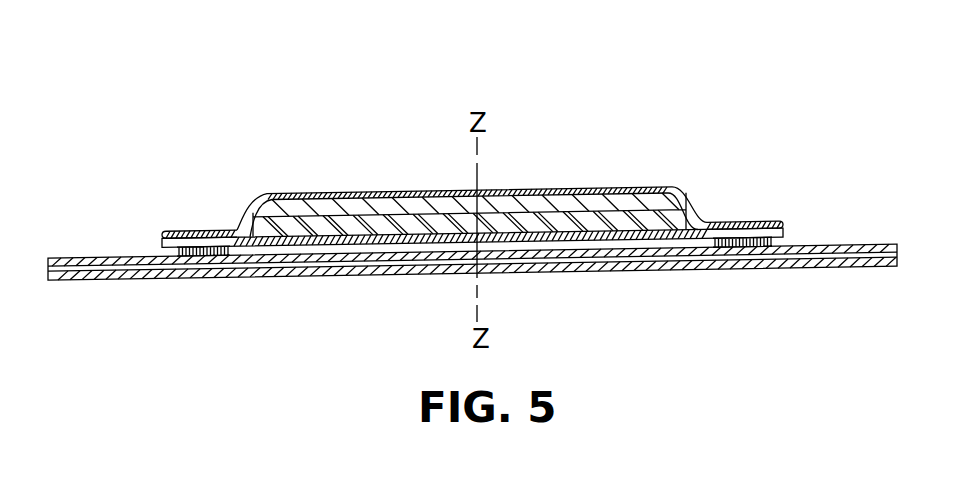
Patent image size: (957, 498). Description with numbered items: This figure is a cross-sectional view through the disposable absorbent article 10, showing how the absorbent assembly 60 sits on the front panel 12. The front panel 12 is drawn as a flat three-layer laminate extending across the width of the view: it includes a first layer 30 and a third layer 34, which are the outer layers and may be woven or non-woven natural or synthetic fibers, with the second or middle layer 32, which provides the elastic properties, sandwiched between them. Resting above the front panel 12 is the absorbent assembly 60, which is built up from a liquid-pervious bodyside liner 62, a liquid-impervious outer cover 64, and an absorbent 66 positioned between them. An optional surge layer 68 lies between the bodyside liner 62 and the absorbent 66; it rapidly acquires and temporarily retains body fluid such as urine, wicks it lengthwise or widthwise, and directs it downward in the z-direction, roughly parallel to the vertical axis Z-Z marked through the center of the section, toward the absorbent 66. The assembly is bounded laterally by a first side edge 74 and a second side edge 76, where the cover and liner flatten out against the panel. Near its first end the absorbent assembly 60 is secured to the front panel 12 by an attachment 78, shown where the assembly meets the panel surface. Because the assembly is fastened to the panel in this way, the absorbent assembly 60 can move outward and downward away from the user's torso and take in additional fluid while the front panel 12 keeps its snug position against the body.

The disposable absorbent article 10 is at (722, 113).
The front panel 12 is at (905, 235).
The first layer 30 is at (833, 245).
The second or middle layer 32 is at (867, 252).
The third layer 34 is at (850, 267).
The absorbent assembly 60 is at (751, 153).
The bodyside liner 62 is at (647, 187).
The outer cover 64 is at (783, 237).
The absorbent 66 is at (693, 213).
The surge layer 68 is at (668, 197).
The first side edge 74 is at (158, 232).
The second side edge 76 is at (783, 232).
The attachment 78 is at (172, 253).